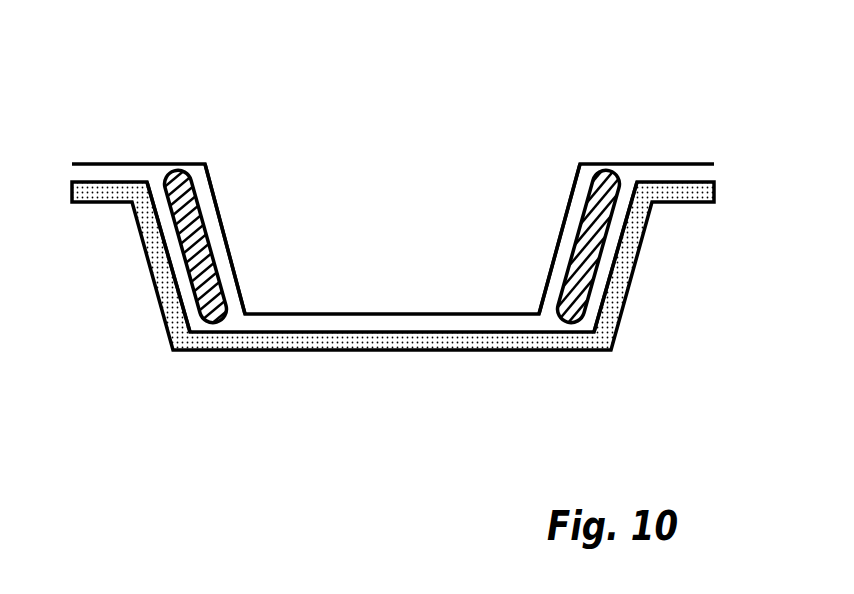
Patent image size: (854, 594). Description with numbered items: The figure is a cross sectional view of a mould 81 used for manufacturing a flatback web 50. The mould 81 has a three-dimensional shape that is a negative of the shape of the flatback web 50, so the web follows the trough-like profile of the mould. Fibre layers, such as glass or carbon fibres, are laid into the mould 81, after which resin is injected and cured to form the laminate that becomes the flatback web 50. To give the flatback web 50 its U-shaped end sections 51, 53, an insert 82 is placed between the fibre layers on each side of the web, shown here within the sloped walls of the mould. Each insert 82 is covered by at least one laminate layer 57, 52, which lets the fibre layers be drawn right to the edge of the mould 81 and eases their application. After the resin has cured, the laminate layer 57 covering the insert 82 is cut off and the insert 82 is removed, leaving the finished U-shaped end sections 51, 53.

The flatback web 50 is at (395, 318).
The U-shaped end section 51 is at (222, 210).
The second electrode 52 is at (564, 242).
The second side wall 53 is at (605, 242).
The laminate layer 57 is at (170, 172).
The mould 81 is at (388, 342).
The insert 82 is at (200, 249).